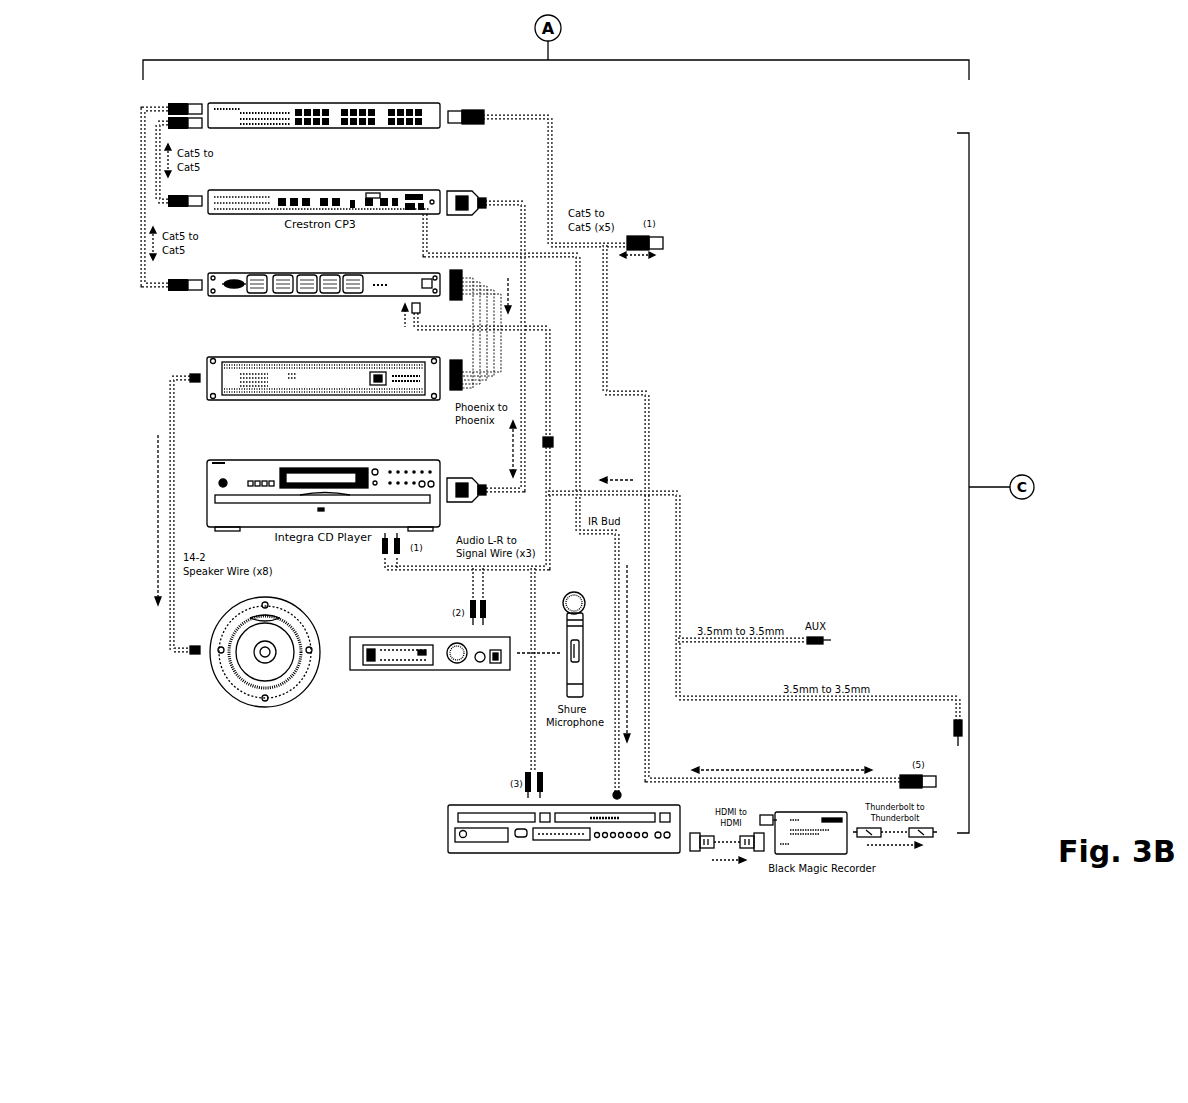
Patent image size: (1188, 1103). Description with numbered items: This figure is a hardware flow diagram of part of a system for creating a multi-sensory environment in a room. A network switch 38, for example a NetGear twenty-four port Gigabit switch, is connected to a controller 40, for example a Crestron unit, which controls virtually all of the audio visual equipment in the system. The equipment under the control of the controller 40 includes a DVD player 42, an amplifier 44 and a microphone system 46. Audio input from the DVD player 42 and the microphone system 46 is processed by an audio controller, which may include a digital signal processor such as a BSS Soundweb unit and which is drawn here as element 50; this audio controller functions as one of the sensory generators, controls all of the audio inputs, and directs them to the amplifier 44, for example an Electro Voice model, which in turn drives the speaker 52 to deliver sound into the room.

The network switch 38 is at (217, 93).
The controller 40 is at (407, 192).
The DVD player 42 is at (647, 855).
The amplifier 44 is at (422, 398).
The microphone system 46 is at (507, 672).
The audio processor 50 is at (240, 294).
The speaker 52 is at (317, 677).